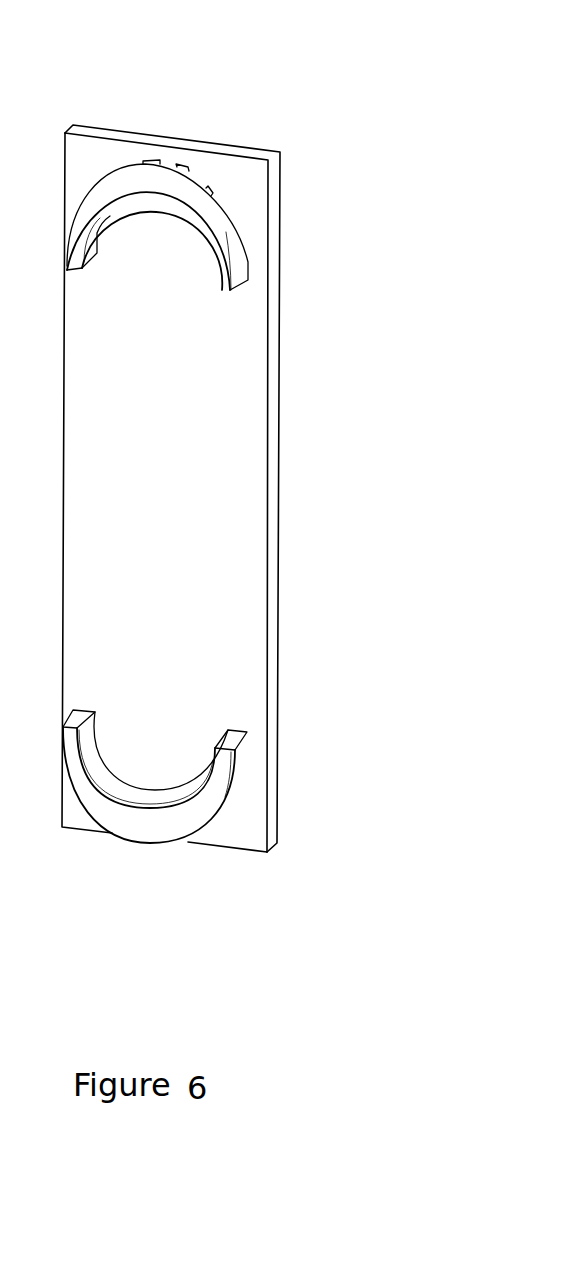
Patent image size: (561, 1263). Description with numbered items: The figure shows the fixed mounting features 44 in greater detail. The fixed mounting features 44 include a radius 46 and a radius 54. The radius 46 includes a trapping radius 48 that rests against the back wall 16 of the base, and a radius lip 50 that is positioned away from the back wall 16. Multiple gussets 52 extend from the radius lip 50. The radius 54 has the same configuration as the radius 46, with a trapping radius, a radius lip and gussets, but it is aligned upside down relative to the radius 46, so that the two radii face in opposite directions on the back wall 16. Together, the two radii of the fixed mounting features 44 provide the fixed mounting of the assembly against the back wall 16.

The fixed mounting features 44 is at (199, 70).
The back wall 16 is at (253, 501).
The radius 46 is at (147, 279).
The trapping radius 48 is at (243, 267).
The radius lip 50 is at (197, 191).
The gussets 52 is at (217, 200).
The radius 54 is at (157, 745).